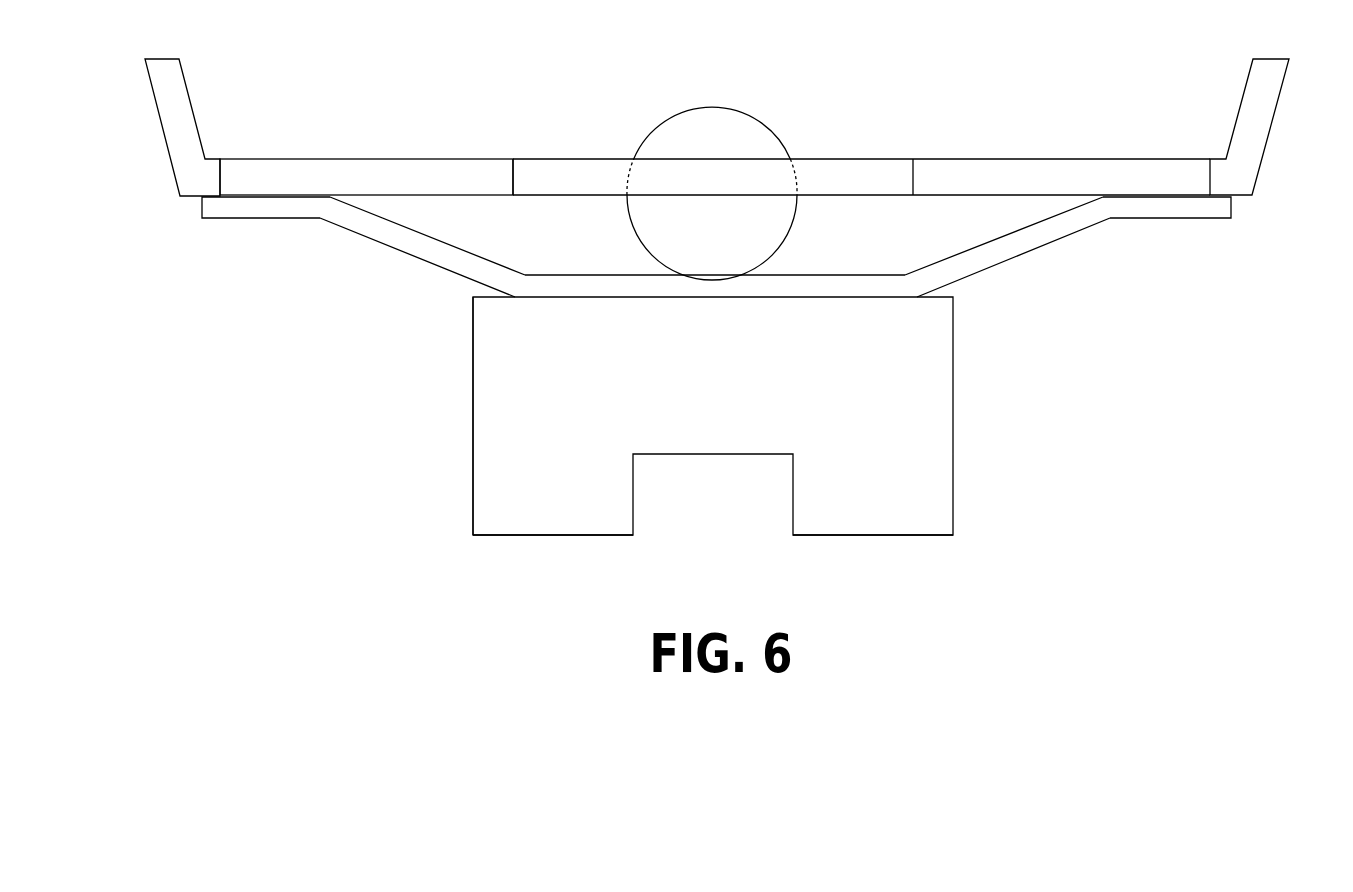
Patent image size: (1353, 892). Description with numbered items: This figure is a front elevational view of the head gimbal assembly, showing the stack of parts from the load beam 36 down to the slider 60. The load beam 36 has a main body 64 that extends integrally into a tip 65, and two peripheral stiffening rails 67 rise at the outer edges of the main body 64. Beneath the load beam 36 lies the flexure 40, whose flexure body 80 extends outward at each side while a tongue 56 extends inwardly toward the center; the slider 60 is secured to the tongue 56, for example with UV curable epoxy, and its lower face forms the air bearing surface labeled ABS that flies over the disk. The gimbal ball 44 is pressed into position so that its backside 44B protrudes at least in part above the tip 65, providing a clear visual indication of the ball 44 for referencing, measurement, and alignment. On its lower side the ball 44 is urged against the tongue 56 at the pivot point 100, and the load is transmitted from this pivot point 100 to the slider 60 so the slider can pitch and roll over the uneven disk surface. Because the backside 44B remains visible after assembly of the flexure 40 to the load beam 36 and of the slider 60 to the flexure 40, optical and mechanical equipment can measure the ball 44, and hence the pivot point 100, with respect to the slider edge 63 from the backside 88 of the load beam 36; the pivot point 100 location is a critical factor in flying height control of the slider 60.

The peripheral stiffening rails 67 is at (177, 120).
The load beam 36 is at (287, 148).
The backside of the load beam 88 is at (495, 146).
The tip 65 is at (835, 173).
The main body 64 is at (1035, 170).
The gimbal ball 44 is at (638, 124).
The backside of the gimbal ball 44B is at (715, 140).
The flexure body 80 is at (1168, 208).
The flexure 40 is at (397, 235).
The tongue 56 is at (783, 283).
The pivot point 100 is at (713, 275).
The slider 60 is at (755, 397).
The edge of the slider 63 is at (473, 425).
The air bearing surface ABS is at (910, 535).